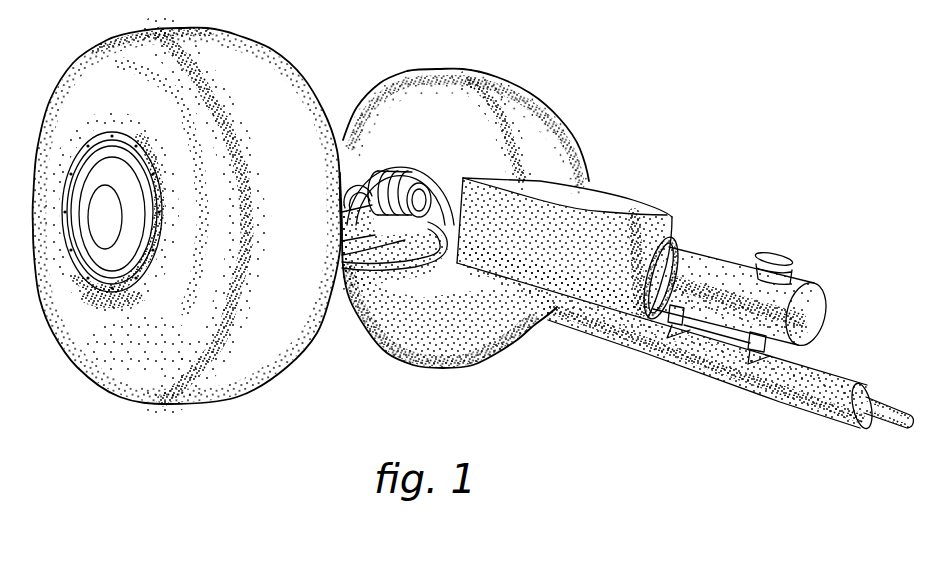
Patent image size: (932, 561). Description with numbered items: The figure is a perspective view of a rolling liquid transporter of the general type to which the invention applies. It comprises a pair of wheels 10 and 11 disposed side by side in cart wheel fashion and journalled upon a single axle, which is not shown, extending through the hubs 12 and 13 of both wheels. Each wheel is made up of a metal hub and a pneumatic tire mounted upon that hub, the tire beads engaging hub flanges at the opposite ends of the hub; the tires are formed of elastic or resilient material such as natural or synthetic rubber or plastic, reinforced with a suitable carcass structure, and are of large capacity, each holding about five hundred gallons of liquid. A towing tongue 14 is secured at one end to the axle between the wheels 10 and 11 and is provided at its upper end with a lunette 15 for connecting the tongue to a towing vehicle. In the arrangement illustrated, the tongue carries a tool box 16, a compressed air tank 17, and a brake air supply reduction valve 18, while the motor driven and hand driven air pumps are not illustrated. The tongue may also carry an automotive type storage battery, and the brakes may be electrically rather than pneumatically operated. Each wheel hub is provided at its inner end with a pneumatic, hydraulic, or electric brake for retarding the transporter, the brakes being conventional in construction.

The wheel 10 is at (184, 30).
The wheel 11 is at (471, 57).
The hub 12 is at (93, 135).
The hub 13 is at (427, 152).
The towing tongue 14 is at (670, 361).
The lunette 15 is at (911, 428).
The tool box 16 is at (617, 194).
The compressed air tank 17 is at (826, 308).
The brake air supply reduction valve 18 is at (396, 167).